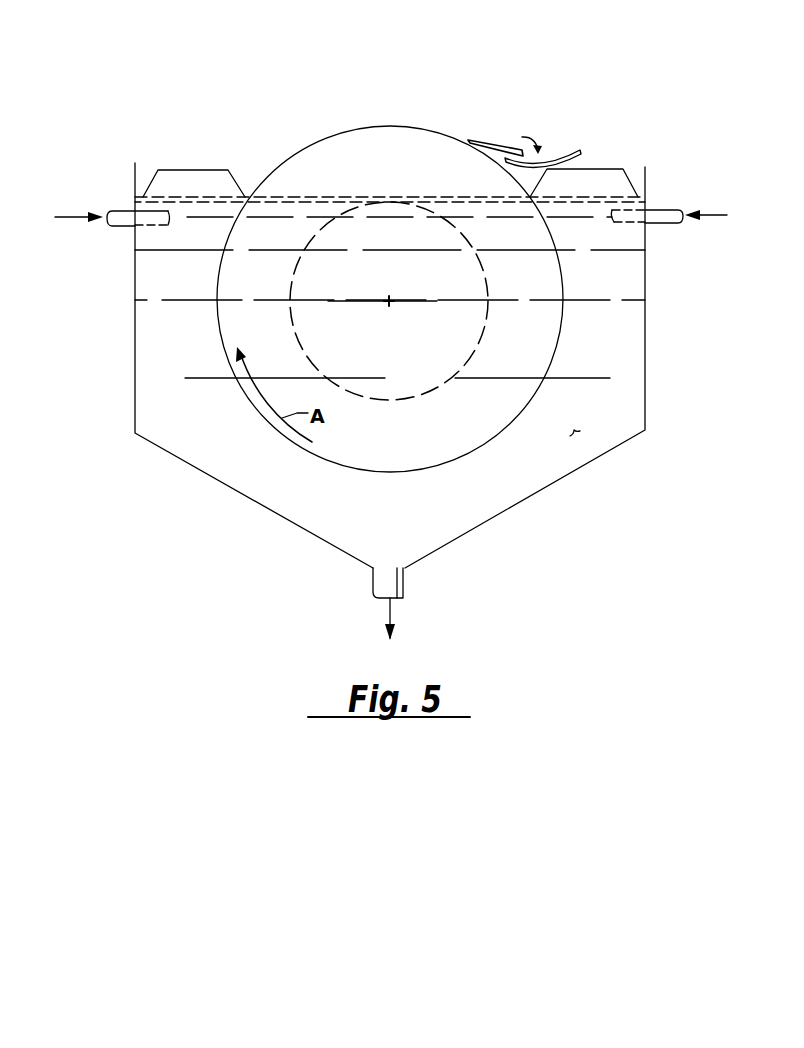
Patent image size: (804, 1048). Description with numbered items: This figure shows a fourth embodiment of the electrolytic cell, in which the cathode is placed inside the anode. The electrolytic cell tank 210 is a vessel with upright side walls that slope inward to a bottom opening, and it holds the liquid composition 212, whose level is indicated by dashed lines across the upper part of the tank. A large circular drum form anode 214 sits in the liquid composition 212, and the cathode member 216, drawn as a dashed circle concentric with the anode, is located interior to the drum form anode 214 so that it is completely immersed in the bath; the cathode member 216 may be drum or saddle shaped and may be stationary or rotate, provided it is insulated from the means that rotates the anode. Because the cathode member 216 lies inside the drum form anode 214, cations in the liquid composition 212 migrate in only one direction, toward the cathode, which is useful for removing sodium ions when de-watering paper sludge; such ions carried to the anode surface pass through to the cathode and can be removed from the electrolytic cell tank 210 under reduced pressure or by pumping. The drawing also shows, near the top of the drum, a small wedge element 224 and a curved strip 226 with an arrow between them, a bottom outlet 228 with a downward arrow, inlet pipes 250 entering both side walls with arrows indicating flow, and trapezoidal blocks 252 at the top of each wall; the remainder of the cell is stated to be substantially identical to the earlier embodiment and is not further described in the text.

The electrolytic cell tank 210 is at (390, 365).
The liquid composition 212 is at (428, 347).
The drum form anode 214 is at (390, 237).
The cathode member 216 is at (510, 301).
The wedge blade 224 is at (526, 98).
The curved deflector strip 226 is at (571, 115).
The bottom outlet 228 is at (447, 604).
The inlet pipes 250 is at (387, 254).
The weir / baffle blocks 252 is at (391, 140).